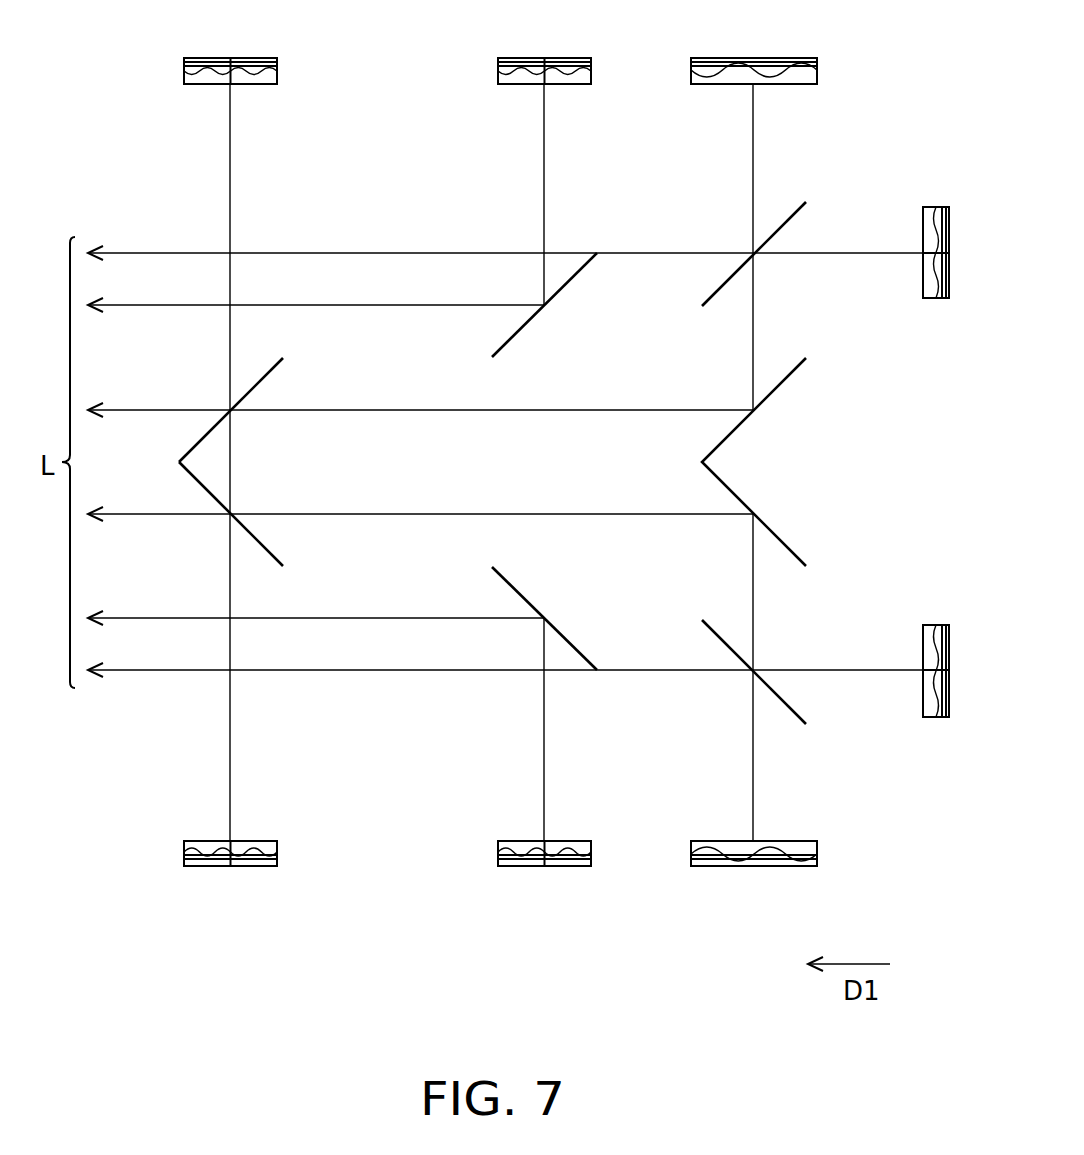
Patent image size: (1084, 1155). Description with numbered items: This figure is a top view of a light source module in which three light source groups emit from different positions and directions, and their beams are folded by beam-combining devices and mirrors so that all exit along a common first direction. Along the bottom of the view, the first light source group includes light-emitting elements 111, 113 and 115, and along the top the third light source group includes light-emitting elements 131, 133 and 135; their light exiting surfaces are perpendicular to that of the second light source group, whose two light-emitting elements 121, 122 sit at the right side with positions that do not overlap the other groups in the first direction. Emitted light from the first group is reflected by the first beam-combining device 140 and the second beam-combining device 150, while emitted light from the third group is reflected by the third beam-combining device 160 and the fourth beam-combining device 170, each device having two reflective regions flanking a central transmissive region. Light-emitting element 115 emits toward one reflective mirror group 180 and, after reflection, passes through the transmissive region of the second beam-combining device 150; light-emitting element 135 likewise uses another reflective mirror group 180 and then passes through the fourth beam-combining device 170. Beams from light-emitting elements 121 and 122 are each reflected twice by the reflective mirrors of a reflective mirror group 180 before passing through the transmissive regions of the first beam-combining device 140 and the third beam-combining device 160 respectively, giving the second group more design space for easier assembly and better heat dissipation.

The light-emitting element 111 is at (257, 858).
The light-emitting element 113 is at (570, 858).
The light-emitting element 115 is at (781, 858).
The light-emitting element 121 is at (940, 717).
The light-emitting element 122 is at (940, 210).
The light-emitting element 131 is at (257, 66).
The light-emitting element 133 is at (570, 66).
The light-emitting element 135 is at (780, 66).
The first beam-combining device 140 is at (273, 552).
The second beam-combining device 150 is at (588, 657).
The third beam-combining device 160 is at (273, 368).
The fourth beam-combining device 170 is at (585, 265).
The reflective mirror group 180 is at (727, 280).